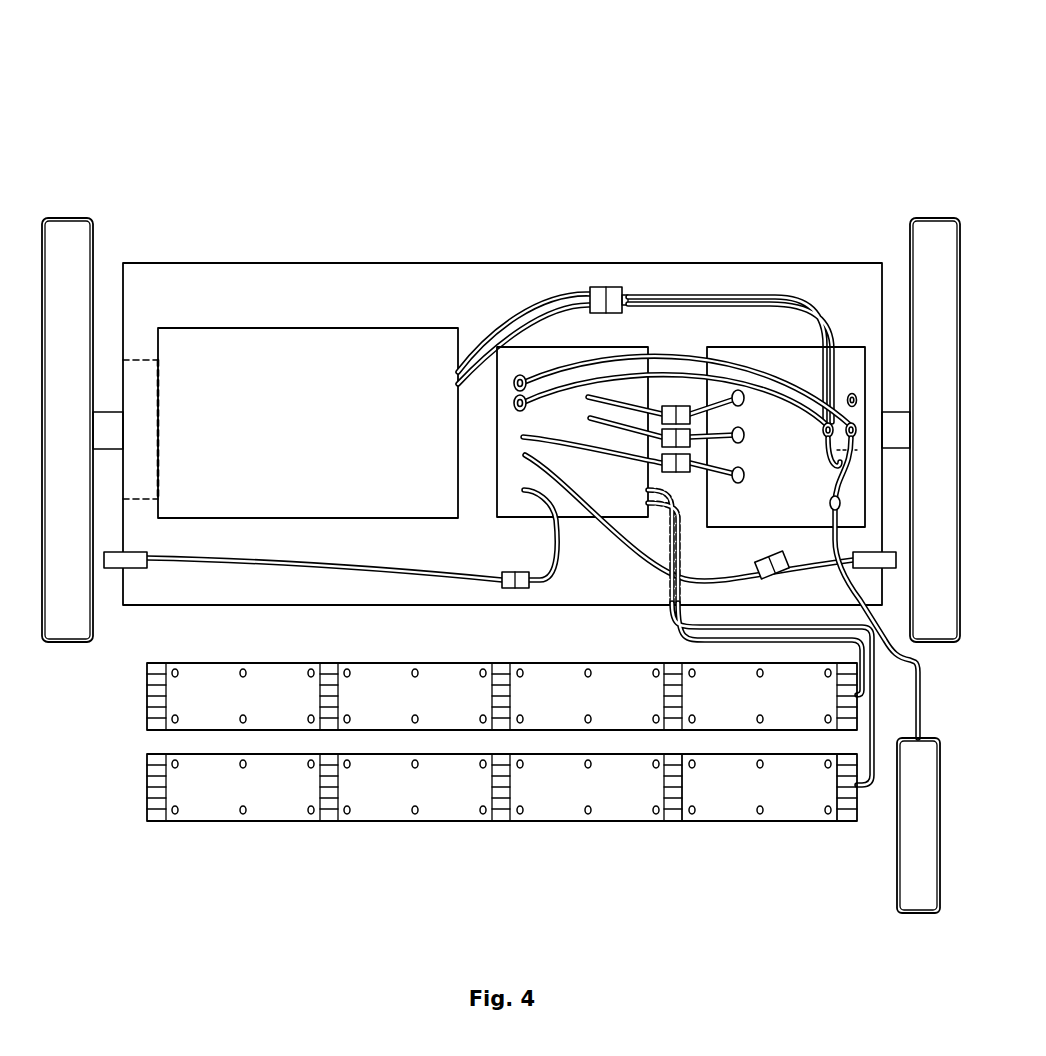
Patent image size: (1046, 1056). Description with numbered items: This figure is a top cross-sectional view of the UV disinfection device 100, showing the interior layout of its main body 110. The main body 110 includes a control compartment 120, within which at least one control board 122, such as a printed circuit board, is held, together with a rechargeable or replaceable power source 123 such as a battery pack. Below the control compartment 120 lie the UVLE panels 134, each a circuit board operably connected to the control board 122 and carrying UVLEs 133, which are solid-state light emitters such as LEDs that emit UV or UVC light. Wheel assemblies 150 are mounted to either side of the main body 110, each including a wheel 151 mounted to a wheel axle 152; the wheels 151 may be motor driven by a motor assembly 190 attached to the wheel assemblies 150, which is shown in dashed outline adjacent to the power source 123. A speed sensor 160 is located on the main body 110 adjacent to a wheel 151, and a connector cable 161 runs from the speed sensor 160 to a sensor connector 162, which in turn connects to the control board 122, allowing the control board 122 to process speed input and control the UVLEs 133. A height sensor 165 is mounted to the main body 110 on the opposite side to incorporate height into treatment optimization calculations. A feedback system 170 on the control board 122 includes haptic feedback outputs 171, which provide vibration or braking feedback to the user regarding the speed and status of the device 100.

The UV disinfection device 100 is at (506, 172).
The main body 110 is at (316, 263).
The control compartment 120 is at (424, 290).
The control board 122 is at (497, 482).
The power source 123 is at (171, 369).
The UVLE 133 is at (592, 822).
The UVLE panel 134 is at (722, 800).
The wheel assembly 150 is at (912, 218).
The wheel 151 is at (67, 217).
The wheel axle 152 is at (100, 412).
The speed sensor 160 is at (116, 568).
The connector cable 161 is at (315, 568).
The sensor connector 162 is at (500, 575).
The height sensor 165 is at (888, 552).
The feedback system 170 is at (745, 472).
The haptic feedback output 171 is at (757, 462).
The motor assembly 190 is at (138, 360).